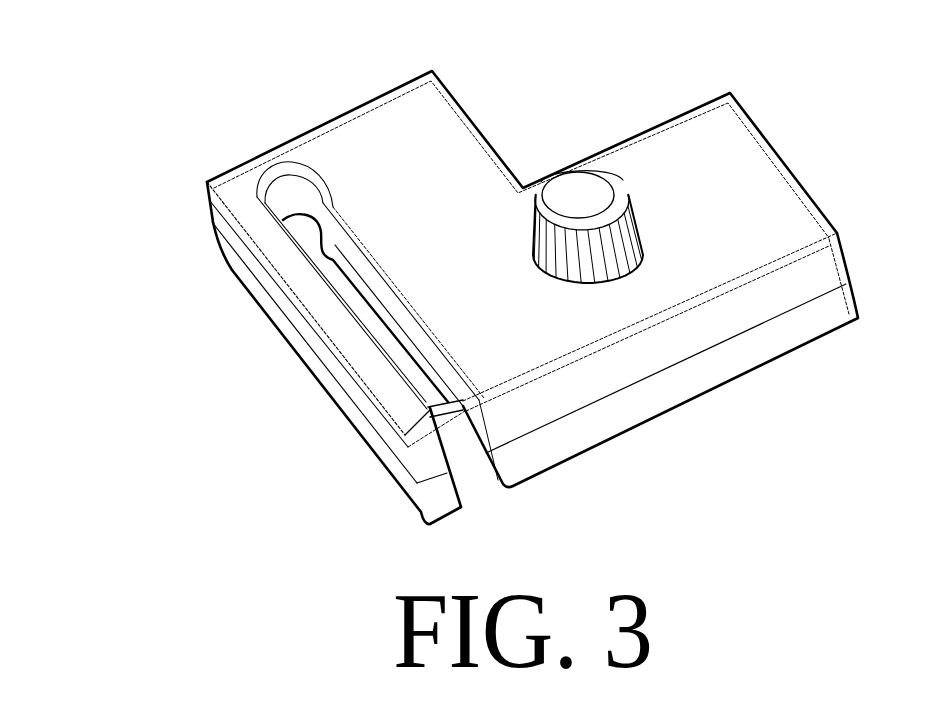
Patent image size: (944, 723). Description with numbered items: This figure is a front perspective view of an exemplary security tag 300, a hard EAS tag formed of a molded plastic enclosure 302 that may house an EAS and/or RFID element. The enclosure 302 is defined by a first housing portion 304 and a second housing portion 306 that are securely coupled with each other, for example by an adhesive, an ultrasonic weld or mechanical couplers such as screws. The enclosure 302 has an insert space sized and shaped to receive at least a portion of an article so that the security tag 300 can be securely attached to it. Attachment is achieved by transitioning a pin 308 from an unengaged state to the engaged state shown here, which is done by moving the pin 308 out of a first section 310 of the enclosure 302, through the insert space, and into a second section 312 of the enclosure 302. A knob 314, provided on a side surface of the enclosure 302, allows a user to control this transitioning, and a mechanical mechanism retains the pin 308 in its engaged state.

The security tag 300 is at (104, 55).
The enclosure 302 is at (790, 110).
The first housing portion 304 is at (202, 219).
The second housing portion 306 is at (255, 316).
The pin 308 is at (460, 400).
The first section 310 is at (734, 228).
The second section 312 is at (323, 446).
The knob 314 is at (516, 237).